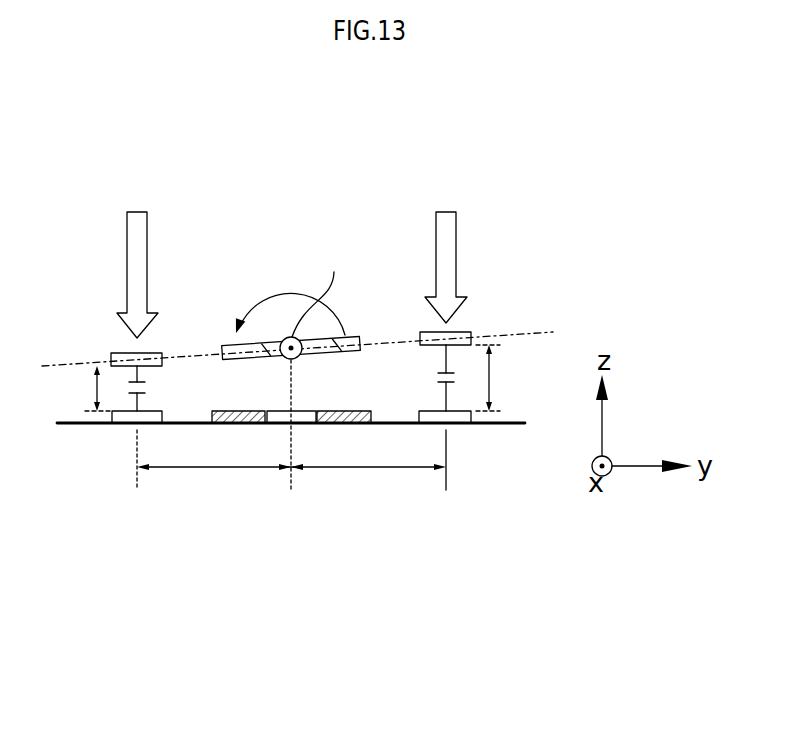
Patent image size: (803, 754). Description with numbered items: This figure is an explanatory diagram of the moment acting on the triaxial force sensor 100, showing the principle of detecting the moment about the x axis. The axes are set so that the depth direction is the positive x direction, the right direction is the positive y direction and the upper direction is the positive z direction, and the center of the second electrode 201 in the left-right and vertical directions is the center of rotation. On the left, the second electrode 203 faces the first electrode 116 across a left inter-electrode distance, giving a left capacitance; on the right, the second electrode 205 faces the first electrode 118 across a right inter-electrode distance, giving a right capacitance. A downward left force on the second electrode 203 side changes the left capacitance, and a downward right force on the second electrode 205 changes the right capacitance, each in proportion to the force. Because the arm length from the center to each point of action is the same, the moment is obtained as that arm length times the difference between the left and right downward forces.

The triaxial force sensor 100 is at (380, 184).
The second electrode 201 is at (235, 346).
The second electrode 203 is at (113, 351).
The second electrode 205 is at (460, 330).
The first electrode 116 is at (126, 426).
The first electrode 118 is at (455, 425).